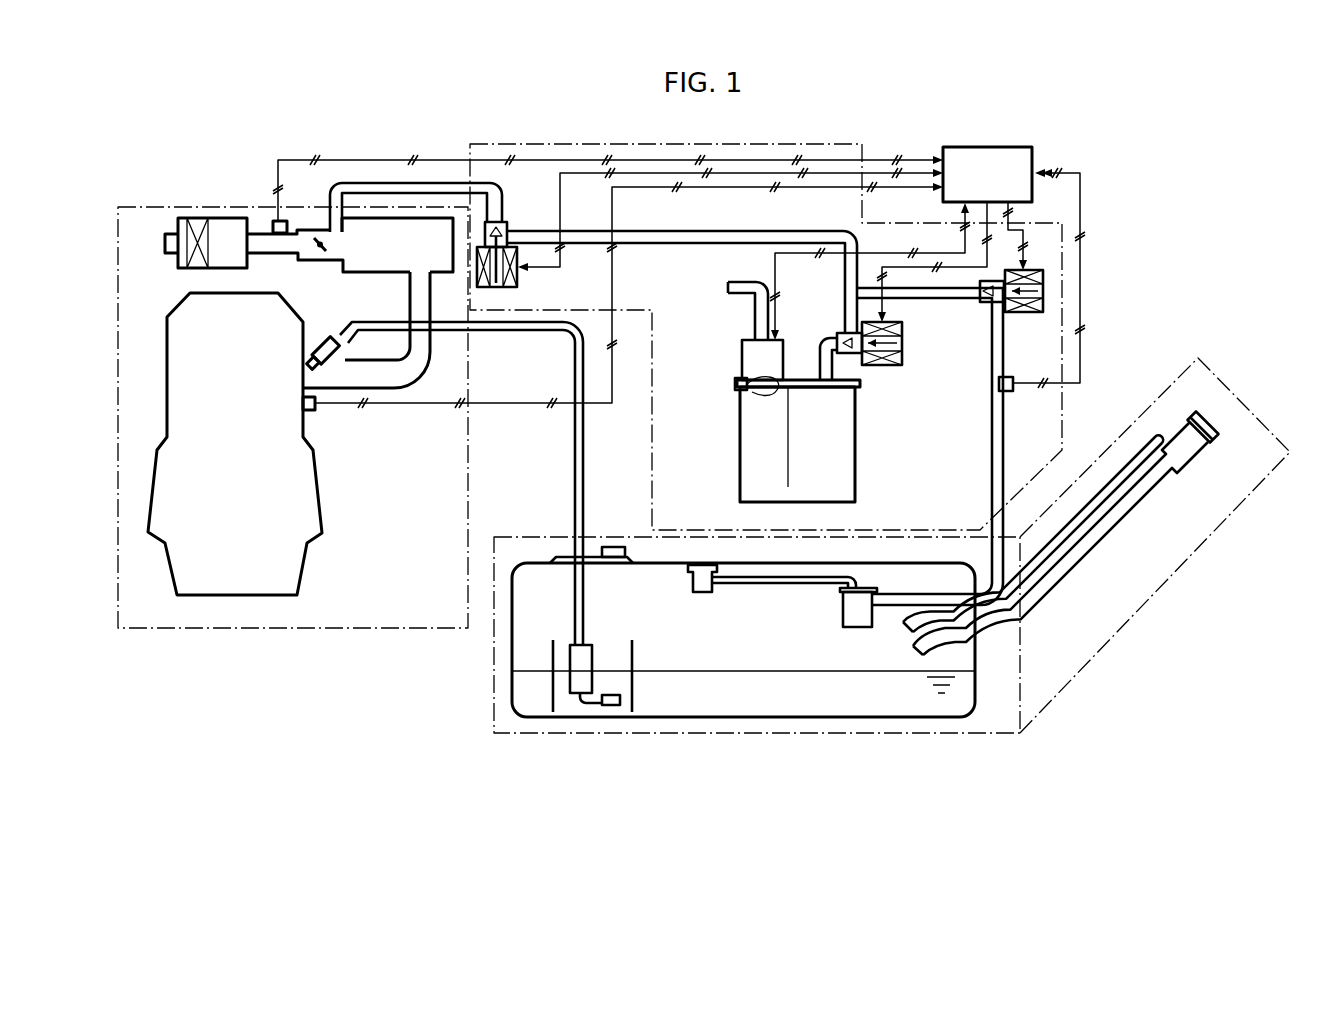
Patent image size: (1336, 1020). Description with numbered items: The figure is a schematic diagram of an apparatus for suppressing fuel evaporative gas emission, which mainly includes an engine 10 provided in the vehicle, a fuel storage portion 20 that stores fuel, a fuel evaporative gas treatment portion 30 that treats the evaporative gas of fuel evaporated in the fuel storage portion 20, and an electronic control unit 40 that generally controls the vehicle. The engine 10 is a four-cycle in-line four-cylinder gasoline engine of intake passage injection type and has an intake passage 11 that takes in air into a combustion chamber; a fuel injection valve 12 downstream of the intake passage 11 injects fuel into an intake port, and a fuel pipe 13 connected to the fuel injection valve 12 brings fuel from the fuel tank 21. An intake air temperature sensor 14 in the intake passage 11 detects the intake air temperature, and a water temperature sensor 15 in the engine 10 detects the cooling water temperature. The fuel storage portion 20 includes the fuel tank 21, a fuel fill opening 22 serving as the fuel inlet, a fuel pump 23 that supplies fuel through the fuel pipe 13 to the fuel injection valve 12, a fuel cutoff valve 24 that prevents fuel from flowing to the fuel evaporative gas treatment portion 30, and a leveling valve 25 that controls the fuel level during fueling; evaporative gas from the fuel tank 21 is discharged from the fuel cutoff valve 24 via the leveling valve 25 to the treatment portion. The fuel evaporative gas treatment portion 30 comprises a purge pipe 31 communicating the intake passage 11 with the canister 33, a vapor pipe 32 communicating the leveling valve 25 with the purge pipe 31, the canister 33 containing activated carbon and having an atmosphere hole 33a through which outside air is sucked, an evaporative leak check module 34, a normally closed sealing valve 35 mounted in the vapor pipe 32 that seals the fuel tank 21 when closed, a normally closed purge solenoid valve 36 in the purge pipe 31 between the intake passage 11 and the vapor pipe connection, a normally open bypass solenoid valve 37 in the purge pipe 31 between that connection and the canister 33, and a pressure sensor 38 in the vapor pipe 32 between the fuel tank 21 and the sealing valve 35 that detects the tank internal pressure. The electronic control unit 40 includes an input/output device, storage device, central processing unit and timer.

The engine 10 is at (295, 630).
The intake passage 11 is at (255, 232).
The fuel injection valve 12 is at (318, 333).
The fuel pipe 13 is at (513, 335).
The intake air temperature sensor 14 is at (287, 230).
The water temperature sensor 15 is at (317, 410).
The fuel storage portion 20 is at (730, 737).
The fuel tank 21 is at (815, 720).
The fuel fill opening 22 is at (1215, 440).
The fuel pump 23 is at (585, 648).
The fuel cutoff valve 24 is at (702, 593).
The leveling valve 25 is at (843, 618).
The fuel evaporative gas treatment portion 30 is at (1063, 415).
The purge pipe 31 is at (668, 243).
The vapor pipe 32 is at (990, 466).
The canister 33 is at (857, 415).
The atmosphere hole 33a is at (740, 393).
The evaporative leak check module 34 is at (740, 348).
The sealing valve 35 is at (1023, 313).
The purge solenoid valve 36 is at (518, 277).
The bypass solenoid valve 37 is at (903, 352).
The pressure sensor 38 is at (1010, 393).
The electronic control unit 40 is at (1032, 152).